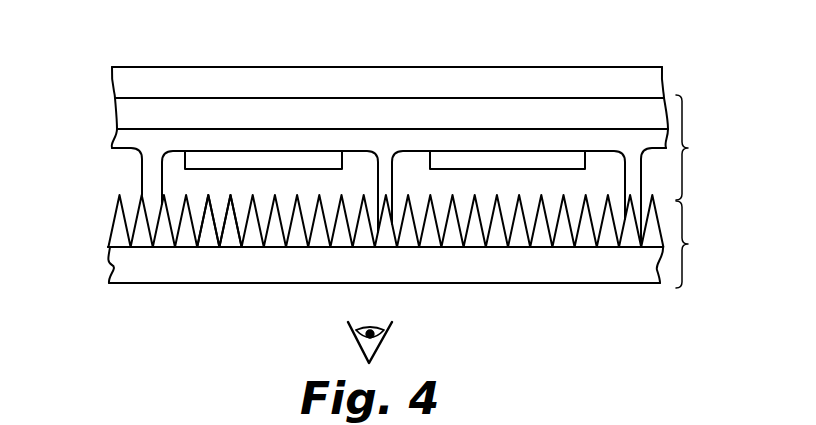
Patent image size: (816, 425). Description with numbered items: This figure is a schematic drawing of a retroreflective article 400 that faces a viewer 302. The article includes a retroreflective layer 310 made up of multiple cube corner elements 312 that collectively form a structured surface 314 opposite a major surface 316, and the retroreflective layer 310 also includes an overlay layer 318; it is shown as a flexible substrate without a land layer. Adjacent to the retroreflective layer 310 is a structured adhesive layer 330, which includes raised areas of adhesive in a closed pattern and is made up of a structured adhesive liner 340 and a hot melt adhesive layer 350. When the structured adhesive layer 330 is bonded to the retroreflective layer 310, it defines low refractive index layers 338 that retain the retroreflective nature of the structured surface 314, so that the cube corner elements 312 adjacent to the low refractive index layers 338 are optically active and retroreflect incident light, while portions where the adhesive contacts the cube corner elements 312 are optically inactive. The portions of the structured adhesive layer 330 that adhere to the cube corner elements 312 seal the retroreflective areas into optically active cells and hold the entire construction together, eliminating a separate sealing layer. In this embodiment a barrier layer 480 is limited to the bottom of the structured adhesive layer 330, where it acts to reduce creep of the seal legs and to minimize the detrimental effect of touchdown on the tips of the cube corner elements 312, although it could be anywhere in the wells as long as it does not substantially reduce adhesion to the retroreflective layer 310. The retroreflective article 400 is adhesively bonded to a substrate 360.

The retroreflective article 400 is at (636, 50).
The substrate 360 is at (120, 80).
The hot melt adhesive layer 350 is at (122, 110).
The structured adhesive liner 340 is at (121, 139).
The low refractive index layers 338 is at (245, 182).
The barrier layer 480 is at (314, 160).
The structured adhesive layer 330 is at (707, 147).
The structured surface 314 is at (142, 212).
The cube corner elements 312 is at (229, 236).
The major surface 316 is at (563, 248).
The overlay layer 318 is at (120, 268).
The retroreflective layer 310 is at (707, 244).
The viewer 302 is at (381, 343).